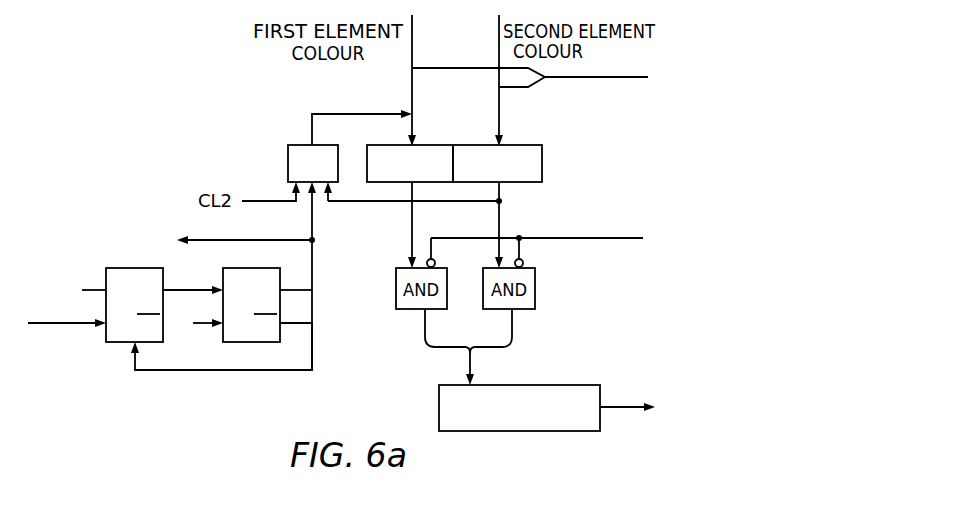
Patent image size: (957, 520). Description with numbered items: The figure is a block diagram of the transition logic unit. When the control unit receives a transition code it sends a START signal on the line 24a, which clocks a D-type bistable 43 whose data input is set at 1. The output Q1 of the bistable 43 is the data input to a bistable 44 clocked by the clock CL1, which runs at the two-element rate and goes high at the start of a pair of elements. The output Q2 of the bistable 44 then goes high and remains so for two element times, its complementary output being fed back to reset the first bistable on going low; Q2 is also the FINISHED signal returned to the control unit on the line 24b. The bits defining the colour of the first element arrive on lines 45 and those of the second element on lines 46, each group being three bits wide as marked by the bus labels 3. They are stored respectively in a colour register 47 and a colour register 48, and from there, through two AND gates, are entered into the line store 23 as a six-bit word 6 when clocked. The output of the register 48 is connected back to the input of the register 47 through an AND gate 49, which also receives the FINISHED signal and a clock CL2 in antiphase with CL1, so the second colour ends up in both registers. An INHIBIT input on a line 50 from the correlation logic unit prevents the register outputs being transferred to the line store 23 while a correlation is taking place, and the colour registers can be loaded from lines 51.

The data input value 1 is at (88, 289).
The three-bit colour lines 3 is at (407, 84).
The six-bit bus 6 is at (466, 357).
The line store 23 is at (567, 383).
The START signal line 24a is at (67, 304).
The FINISHED signal line 24b is at (244, 241).
The D-type bistable 43 is at (130, 266).
The bistable 44 is at (264, 267).
The first element colour lines 45 is at (414, 50).
The second element colour lines 46 is at (497, 94).
The colour register 47 is at (426, 144).
The colour register 48 is at (517, 144).
The AND gate 49 is at (295, 143).
The INHIBIT line 50 is at (626, 240).
The register loading lines 51 is at (641, 79).